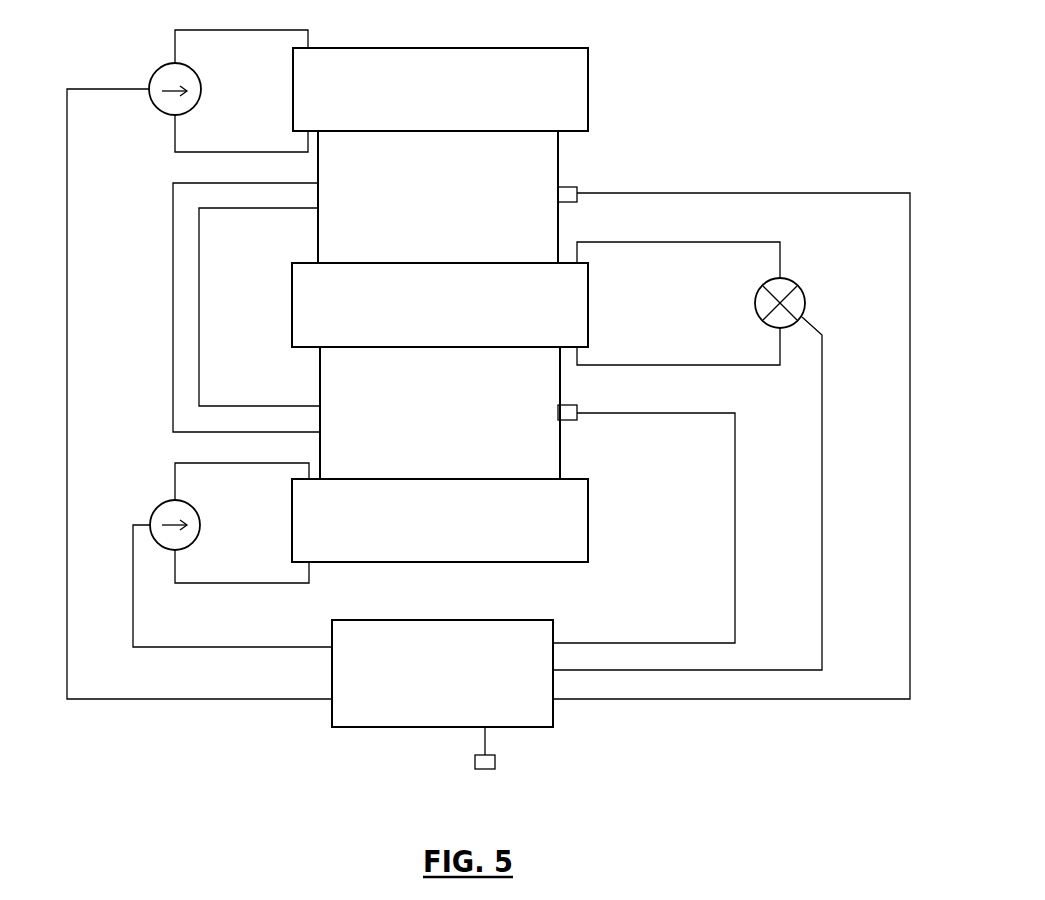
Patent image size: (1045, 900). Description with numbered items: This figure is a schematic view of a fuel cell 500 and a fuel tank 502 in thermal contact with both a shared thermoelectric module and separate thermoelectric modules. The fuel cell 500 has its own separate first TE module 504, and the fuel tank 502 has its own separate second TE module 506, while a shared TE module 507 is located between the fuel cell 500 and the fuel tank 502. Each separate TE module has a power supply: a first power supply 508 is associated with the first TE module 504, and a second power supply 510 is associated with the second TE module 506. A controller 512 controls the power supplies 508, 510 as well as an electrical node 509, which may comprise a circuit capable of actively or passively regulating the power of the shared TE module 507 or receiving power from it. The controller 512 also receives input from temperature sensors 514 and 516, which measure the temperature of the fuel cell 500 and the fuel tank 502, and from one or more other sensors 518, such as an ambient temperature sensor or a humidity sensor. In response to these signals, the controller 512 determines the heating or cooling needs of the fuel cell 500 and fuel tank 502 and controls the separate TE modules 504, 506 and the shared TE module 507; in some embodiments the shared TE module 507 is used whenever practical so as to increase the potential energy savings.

The fuel cell 500 is at (543, 167).
The fuel tank 502 is at (540, 442).
The first TE module 504 is at (570, 77).
The second TE module 506 is at (527, 548).
The shared TE module 507 is at (317, 318).
The first power supply 508 is at (158, 80).
The electrical node 509 is at (800, 305).
The second power supply 510 is at (158, 513).
The controller 512 is at (393, 712).
The temperature sensor 514 is at (577, 200).
The temperature sensor 516 is at (573, 413).
The other sensor 518 is at (495, 763).